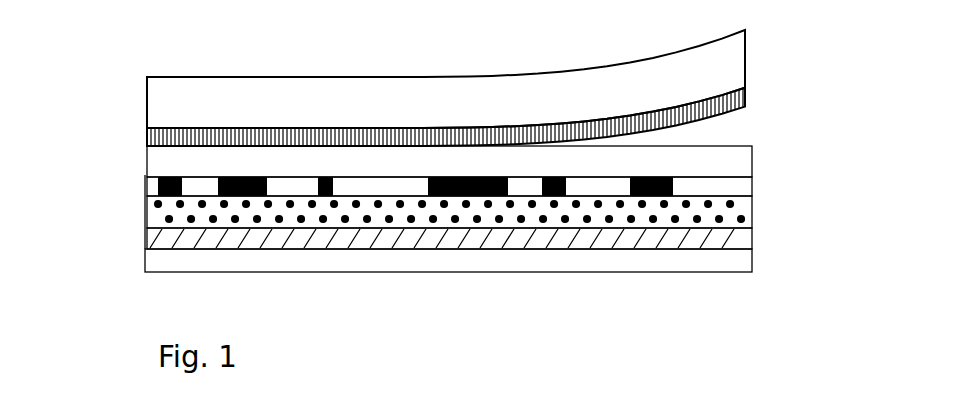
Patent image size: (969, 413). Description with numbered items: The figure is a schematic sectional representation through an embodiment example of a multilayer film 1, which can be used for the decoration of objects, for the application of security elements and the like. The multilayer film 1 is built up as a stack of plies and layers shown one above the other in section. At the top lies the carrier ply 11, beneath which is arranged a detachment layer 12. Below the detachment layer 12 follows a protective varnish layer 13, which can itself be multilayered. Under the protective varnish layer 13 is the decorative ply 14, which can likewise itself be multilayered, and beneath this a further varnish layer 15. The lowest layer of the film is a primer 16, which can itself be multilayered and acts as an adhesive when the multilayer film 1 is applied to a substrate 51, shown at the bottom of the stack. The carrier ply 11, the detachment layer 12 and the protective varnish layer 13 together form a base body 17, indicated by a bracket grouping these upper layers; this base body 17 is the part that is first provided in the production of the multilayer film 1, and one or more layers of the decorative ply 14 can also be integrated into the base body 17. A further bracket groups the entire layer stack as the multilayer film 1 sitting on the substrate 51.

The multilayer film 1 is at (107, 77).
The carrier ply 11 is at (735, 57).
The detachment layer 12 is at (745, 98).
The protective varnish layer 13 is at (737, 162).
The decorative ply 14 is at (737, 192).
The further varnish layer 15 is at (737, 213).
The primer 16 is at (737, 233).
The base body 17 is at (137, 77).
The substrate 51 is at (157, 265).